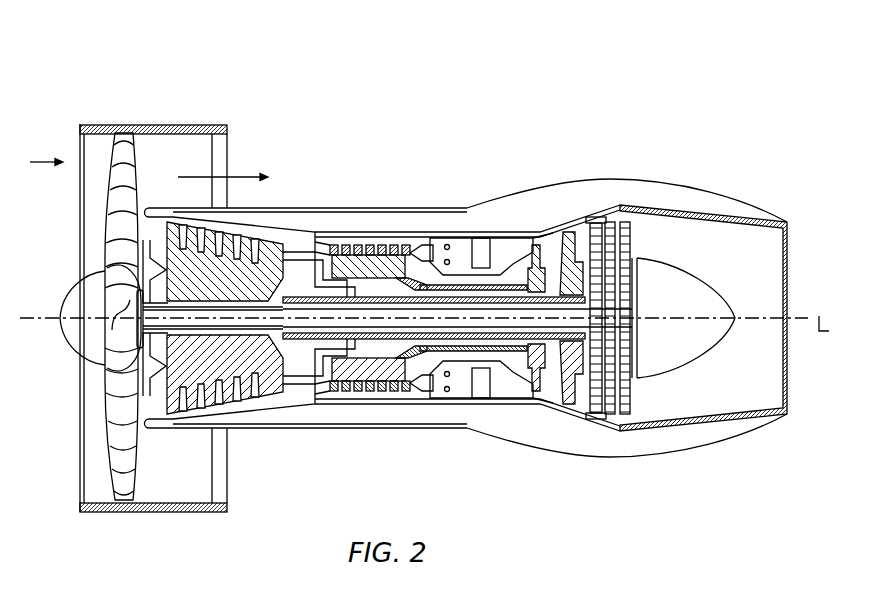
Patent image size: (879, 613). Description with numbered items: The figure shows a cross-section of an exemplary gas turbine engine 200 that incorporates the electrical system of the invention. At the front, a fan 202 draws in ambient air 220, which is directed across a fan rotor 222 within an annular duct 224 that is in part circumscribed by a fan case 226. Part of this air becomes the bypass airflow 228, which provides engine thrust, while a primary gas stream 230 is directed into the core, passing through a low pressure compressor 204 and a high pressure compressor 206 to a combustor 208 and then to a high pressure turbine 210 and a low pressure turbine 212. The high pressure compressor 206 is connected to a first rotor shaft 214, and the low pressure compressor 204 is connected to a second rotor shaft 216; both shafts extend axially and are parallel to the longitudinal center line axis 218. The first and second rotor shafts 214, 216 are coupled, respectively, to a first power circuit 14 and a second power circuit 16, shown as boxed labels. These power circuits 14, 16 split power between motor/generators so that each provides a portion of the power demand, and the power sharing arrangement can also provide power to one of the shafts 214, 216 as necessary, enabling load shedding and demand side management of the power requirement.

The gas turbine engine 200 is at (566, 60).
The fan 202 is at (96, 214).
The low pressure compressor 204 is at (250, 265).
The high pressure compressor 206 is at (368, 382).
The combustor 208 is at (457, 392).
The high pressure turbine 210 is at (535, 243).
The low pressure turbine 212 is at (660, 218).
The first rotor shaft 214 is at (478, 352).
The second rotor shaft 216 is at (557, 410).
The longitudinal center line axis 218 is at (803, 318).
The ambient air 220 is at (47, 160).
The fan rotor 222 is at (123, 490).
The annular duct 224 is at (213, 477).
The fan case 226 is at (168, 513).
The bypass airflow 228 is at (257, 177).
The primary gas stream 230 is at (323, 245).
The first power circuit 14 is at (510, 232).
The second power circuit 16 is at (553, 233).